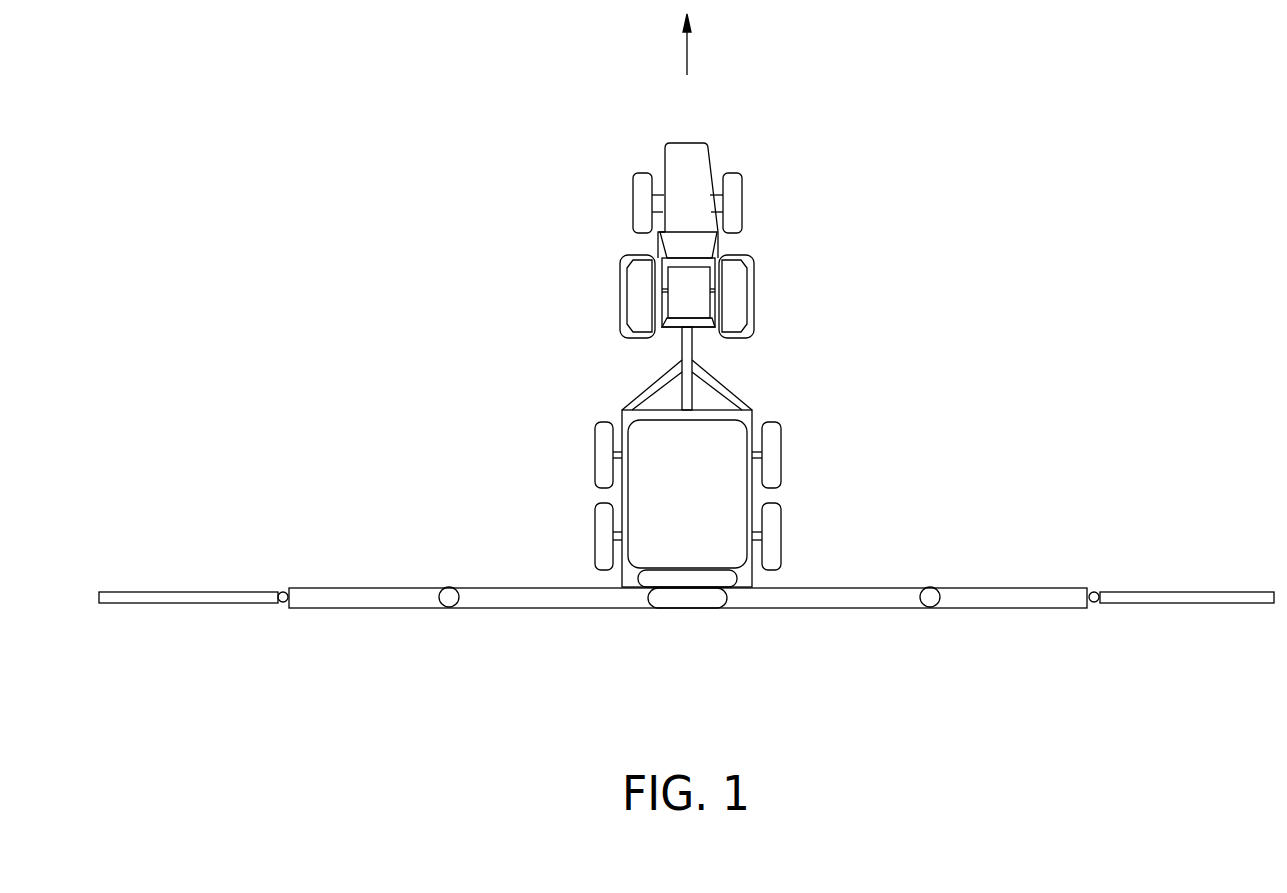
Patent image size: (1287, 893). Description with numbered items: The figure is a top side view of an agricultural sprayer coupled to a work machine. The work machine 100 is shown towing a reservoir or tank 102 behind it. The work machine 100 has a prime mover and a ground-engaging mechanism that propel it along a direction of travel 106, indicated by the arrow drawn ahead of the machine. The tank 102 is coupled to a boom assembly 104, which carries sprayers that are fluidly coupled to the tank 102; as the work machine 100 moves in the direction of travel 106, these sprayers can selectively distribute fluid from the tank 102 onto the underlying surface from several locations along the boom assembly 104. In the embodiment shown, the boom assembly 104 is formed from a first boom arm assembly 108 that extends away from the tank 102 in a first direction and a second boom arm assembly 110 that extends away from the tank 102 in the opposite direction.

The work machine 100 is at (668, 160).
The tank 102 is at (725, 488).
The boom assembly 104 is at (916, 622).
The direction of travel 106 is at (688, 58).
The first boom arm assembly 108 is at (95, 715).
The second boom arm assembly 110 is at (1277, 715).